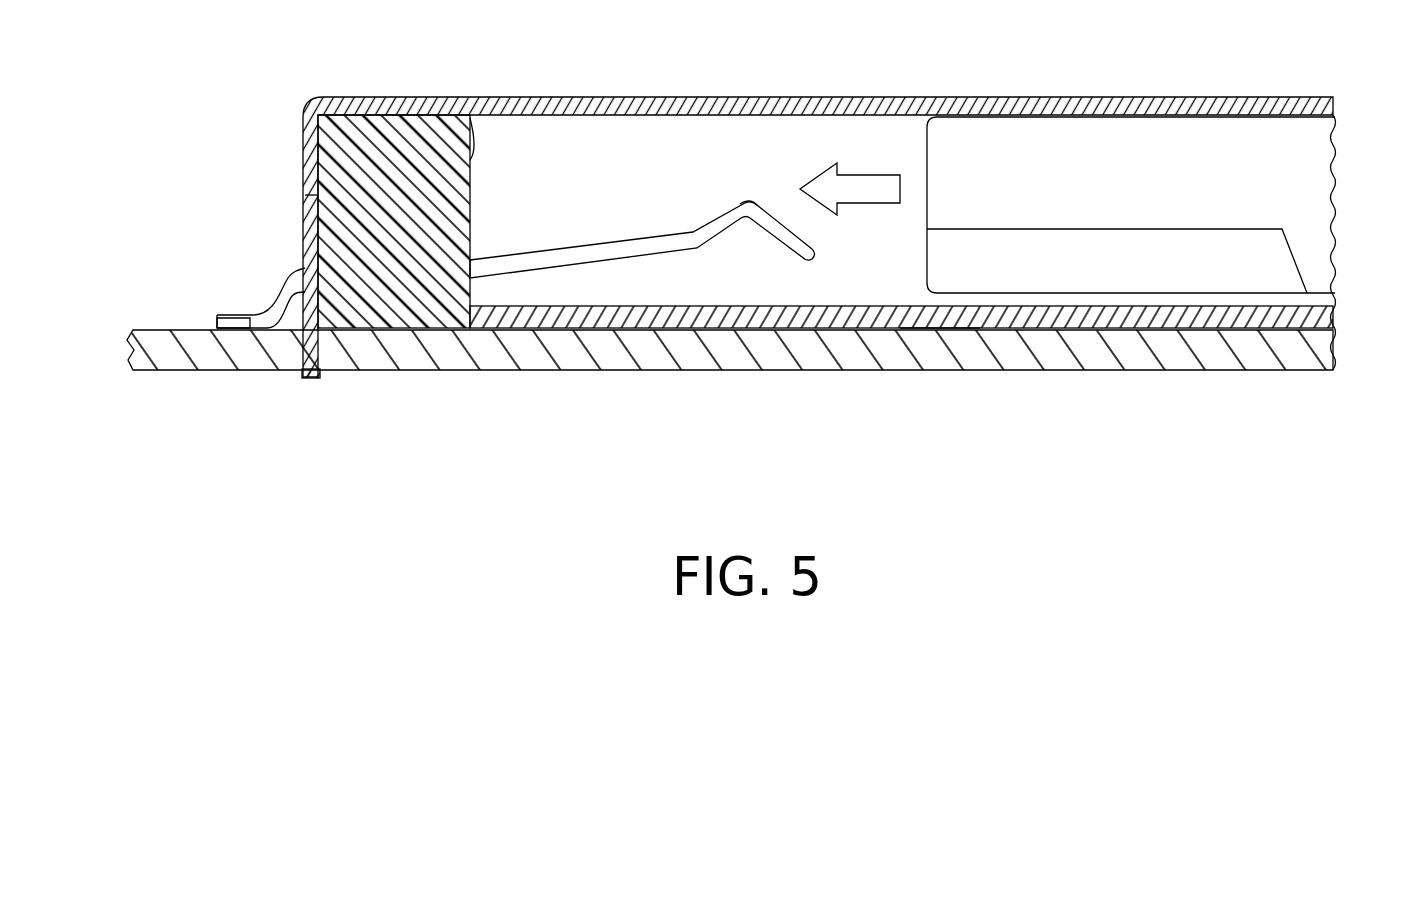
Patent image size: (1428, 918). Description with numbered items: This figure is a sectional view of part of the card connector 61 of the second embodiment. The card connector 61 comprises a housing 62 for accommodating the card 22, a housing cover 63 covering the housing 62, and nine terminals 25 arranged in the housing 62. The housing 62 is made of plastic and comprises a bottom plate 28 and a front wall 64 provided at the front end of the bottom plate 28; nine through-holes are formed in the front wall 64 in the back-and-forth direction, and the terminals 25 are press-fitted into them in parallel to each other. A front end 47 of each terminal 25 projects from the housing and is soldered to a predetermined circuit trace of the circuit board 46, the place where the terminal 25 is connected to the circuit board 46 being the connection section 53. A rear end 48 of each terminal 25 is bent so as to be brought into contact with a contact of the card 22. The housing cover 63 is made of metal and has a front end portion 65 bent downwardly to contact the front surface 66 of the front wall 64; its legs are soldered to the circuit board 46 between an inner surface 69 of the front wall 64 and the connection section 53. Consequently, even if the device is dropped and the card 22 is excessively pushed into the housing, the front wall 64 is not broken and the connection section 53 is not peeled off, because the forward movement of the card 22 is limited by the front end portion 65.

The card 22 is at (1310, 183).
The terminal 25 is at (594, 272).
The bottom plate 28 is at (939, 320).
The circuit board 46 is at (853, 345).
The front end 47 is at (243, 312).
The rear end 48 is at (747, 204).
The connection section 53 is at (228, 313).
The card connector 61 is at (772, 233).
The housing 62 is at (750, 333).
The housing cover 63 is at (1060, 93).
The front wall 64 is at (398, 300).
The front end portion 65 is at (299, 161).
The front surface 66 is at (317, 207).
The inner surface 69 is at (472, 162).